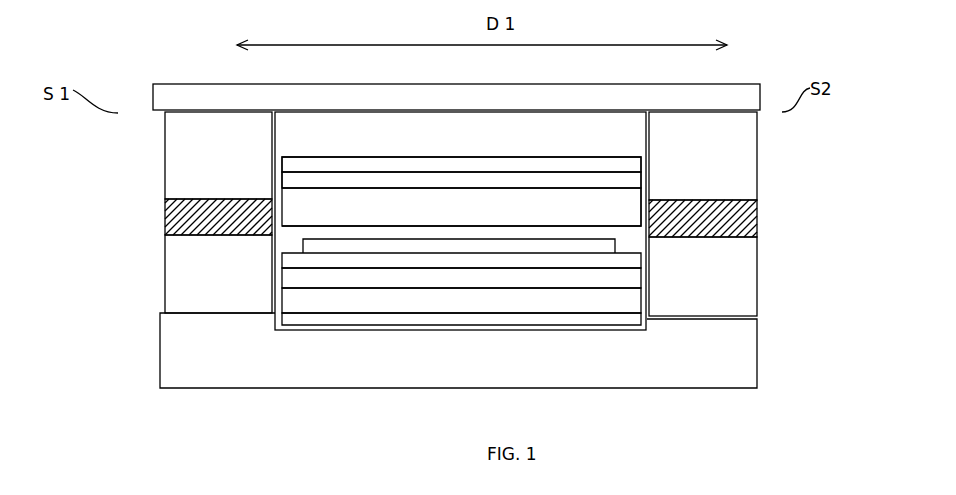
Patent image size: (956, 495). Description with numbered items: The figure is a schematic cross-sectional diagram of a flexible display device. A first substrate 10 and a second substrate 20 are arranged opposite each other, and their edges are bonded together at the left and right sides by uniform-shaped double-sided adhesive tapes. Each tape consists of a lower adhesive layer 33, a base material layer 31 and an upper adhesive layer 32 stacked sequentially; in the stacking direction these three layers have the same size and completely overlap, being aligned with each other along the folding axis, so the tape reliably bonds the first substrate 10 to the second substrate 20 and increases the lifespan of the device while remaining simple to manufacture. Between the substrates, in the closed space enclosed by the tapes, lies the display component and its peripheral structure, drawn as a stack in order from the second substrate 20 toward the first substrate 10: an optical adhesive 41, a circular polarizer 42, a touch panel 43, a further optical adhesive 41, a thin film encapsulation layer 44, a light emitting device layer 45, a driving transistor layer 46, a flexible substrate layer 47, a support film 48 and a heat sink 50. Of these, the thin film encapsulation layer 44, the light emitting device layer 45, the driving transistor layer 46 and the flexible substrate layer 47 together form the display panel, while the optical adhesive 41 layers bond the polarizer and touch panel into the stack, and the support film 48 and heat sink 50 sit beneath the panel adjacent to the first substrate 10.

The first substrate 10 is at (345, 368).
The second substrate 20 is at (230, 97).
The base material layer 31 is at (176, 224).
The upper adhesive layer 32 is at (182, 162).
The lower adhesive layer 33 is at (178, 280).
The optical adhesive 41 is at (612, 128).
The circular polarizer 42 is at (625, 165).
The touch panel 43 is at (625, 180).
The thin film encapsulation layer 44 is at (618, 215).
The light emitting device layer 45 is at (628, 232).
The driving transistor layer 46 is at (607, 243).
The flexible substrate layer 47 is at (620, 262).
The support film 48 is at (625, 283).
The heat sink 50 is at (628, 305).